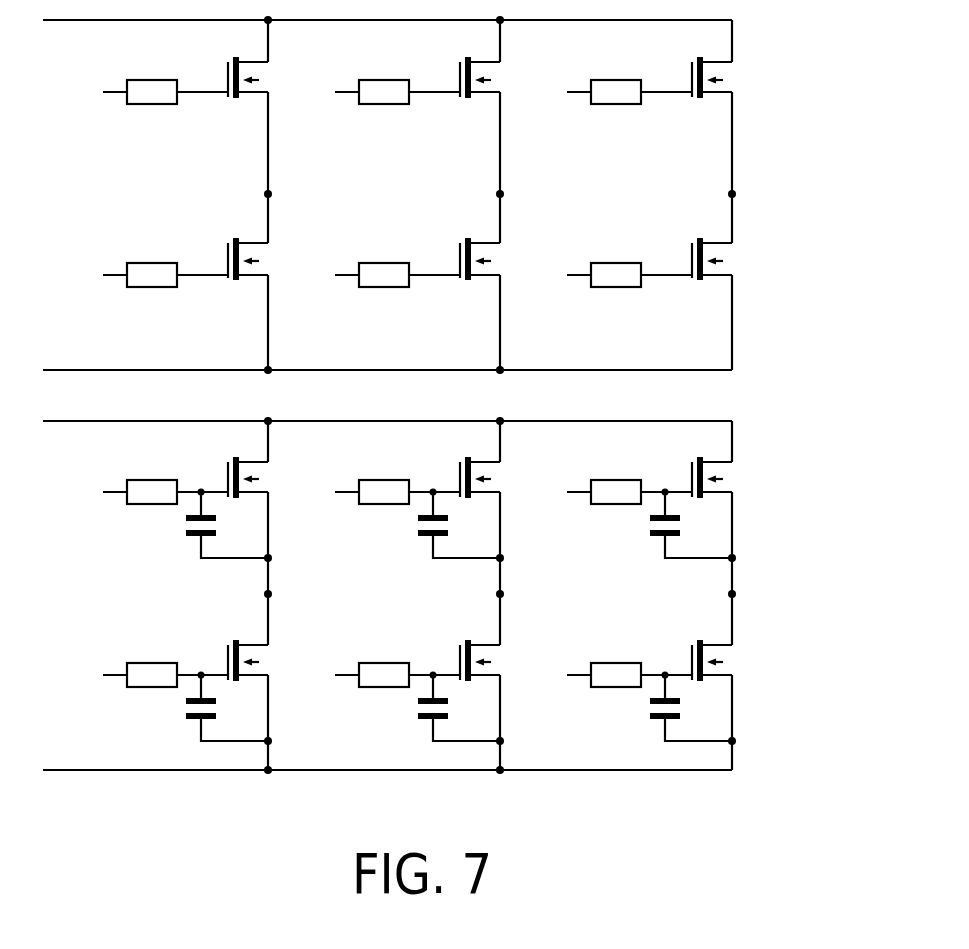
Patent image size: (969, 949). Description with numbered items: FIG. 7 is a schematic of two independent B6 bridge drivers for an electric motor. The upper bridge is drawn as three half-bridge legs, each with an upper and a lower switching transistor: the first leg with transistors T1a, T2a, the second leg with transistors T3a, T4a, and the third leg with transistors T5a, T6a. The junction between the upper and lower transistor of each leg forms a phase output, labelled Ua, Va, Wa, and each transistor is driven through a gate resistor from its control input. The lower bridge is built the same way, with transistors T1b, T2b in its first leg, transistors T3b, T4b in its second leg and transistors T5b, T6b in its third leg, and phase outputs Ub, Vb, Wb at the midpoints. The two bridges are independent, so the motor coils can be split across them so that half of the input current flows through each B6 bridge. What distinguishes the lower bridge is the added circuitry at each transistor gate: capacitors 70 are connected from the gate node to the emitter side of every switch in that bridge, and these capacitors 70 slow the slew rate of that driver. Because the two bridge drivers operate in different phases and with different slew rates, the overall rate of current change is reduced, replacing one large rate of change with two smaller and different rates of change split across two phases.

The capacitors 70 is at (771, 514).
The upper switching transistor, phase U, first inverter T1a is at (185, 71).
The lower switching transistor, phase U, first inverter T2a is at (185, 254).
The upper switching transistor, phase V, first inverter T3a is at (417, 71).
The lower switching transistor, phase V, first inverter T4a is at (417, 254).
The upper switching transistor, phase W, first inverter T5a is at (649, 71).
The lower switching transistor, phase W, first inverter T6a is at (649, 254).
The upper switching transistor, phase U, second inverter T1b is at (185, 471).
The lower switching transistor, phase U, second inverter T2b is at (185, 654).
The upper switching transistor, phase V, second inverter T3b is at (417, 471).
The lower switching transistor, phase V, second inverter T4b is at (417, 654).
The upper switching transistor, phase W, second inverter T5b is at (649, 471).
The lower switching transistor, phase W, second inverter T6b is at (649, 654).
The phase U output node, first inverter Ua is at (284, 195).
The phase V output node, first inverter Va is at (516, 195).
The phase W output node, first inverter Wa is at (753, 195).
The phase U output node, second inverter Ub is at (284, 595).
The phase V output node, second inverter Vb is at (516, 595).
The phase W output node, second inverter Wb is at (753, 595).